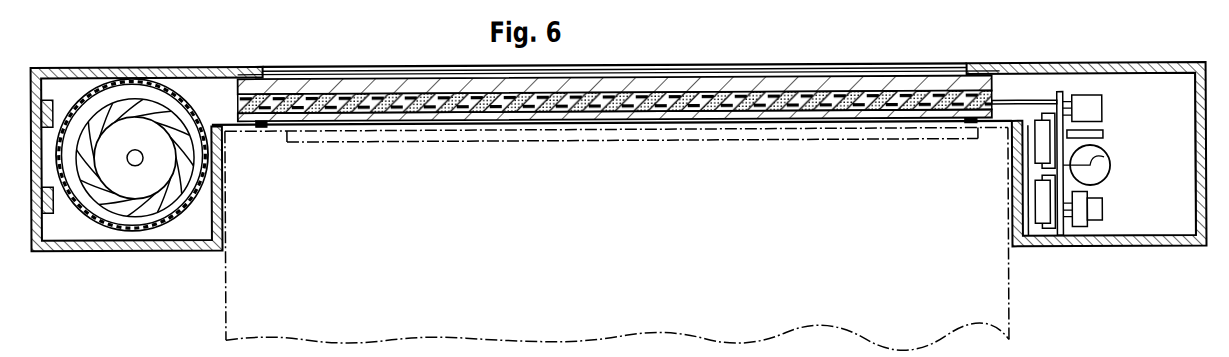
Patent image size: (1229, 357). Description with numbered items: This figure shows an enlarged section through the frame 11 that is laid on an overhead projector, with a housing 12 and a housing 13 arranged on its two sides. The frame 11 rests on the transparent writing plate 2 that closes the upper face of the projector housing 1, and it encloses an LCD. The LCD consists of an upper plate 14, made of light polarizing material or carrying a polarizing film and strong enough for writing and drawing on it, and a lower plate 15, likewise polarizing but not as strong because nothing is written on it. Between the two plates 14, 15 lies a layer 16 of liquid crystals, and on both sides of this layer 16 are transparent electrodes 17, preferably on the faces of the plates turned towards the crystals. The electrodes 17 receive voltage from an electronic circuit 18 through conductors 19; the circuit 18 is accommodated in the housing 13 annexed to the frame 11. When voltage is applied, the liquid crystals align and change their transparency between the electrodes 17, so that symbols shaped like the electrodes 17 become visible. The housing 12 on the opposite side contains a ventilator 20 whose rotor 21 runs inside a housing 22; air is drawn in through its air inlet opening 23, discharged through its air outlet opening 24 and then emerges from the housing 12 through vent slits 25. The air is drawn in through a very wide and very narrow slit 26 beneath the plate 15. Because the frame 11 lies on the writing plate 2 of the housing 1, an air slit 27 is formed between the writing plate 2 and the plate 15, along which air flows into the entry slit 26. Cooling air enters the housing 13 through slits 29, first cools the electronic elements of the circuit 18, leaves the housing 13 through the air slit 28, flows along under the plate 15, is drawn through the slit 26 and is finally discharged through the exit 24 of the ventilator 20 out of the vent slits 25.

The housing 1 is at (996, 320).
The transparent writing plate 2 is at (451, 146).
The frame 11 is at (838, 67).
The housing 12 is at (147, 184).
The housing 13 is at (1087, 179).
The upper plate 14 is at (614, 101).
The plate 15 is at (372, 124).
The layer of liquid crystals 16 is at (614, 99).
The transparent electrodes 17 is at (533, 121).
The electronic circuit 18 is at (1096, 168).
The conductors 19 is at (1024, 104).
The ventilator 20 is at (133, 163).
The rotor 21 is at (145, 210).
The housing 22 is at (157, 227).
The air inlet opening 23 is at (200, 111).
The air outlet opening 24 is at (77, 112).
The vent slits 25 is at (47, 205).
The slit 26 is at (253, 130).
The air slit 27 is at (582, 127).
The air slit 28 is at (977, 128).
The slits 29 is at (1190, 121).